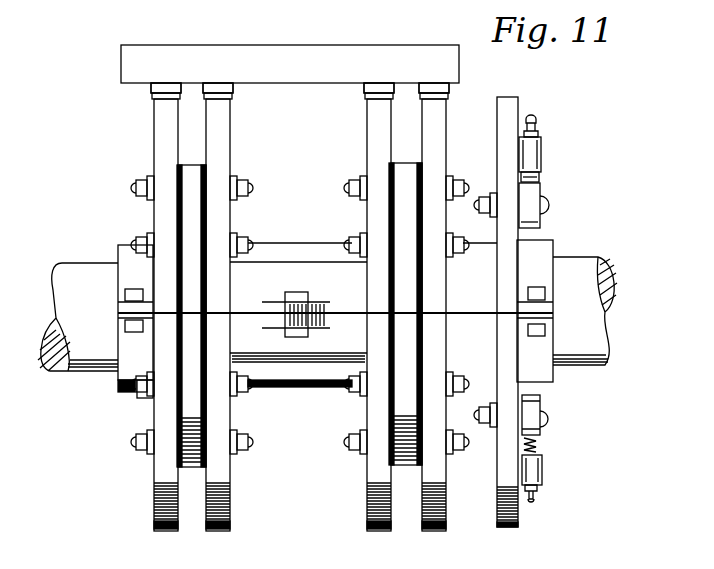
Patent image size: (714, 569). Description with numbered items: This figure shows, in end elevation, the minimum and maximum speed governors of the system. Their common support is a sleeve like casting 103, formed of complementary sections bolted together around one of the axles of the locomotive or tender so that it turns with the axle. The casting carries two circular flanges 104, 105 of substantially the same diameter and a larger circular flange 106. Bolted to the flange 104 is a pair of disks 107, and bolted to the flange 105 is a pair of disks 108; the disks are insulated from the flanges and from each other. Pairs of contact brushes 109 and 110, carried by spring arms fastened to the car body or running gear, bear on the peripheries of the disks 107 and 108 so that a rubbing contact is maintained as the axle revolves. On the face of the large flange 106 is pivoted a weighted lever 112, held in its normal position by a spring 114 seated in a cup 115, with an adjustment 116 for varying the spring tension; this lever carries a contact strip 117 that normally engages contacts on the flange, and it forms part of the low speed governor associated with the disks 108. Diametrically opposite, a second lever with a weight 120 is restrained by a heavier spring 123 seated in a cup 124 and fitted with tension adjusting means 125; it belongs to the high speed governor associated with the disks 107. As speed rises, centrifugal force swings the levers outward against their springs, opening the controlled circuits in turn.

The sleeve like casting 103 is at (536, 251).
The circular flange 104 is at (190, 178).
The circular flange 105 is at (402, 185).
The circular flange 106 is at (512, 103).
The pair of disks 107 is at (160, 521).
The pair of disks 108 is at (372, 521).
The pair of contact brushes 109 is at (211, 82).
The pair of contact brushes 110 is at (425, 82).
The lever 112 is at (548, 427).
The spring 114 is at (540, 448).
The cup 115 is at (548, 481).
The adjustment 116 is at (538, 498).
The contact strip 117 is at (541, 400).
The weight 120 is at (531, 202).
The spring 123 is at (540, 178).
The cup 124 is at (542, 150).
The tension adjusting means 125 is at (540, 125).